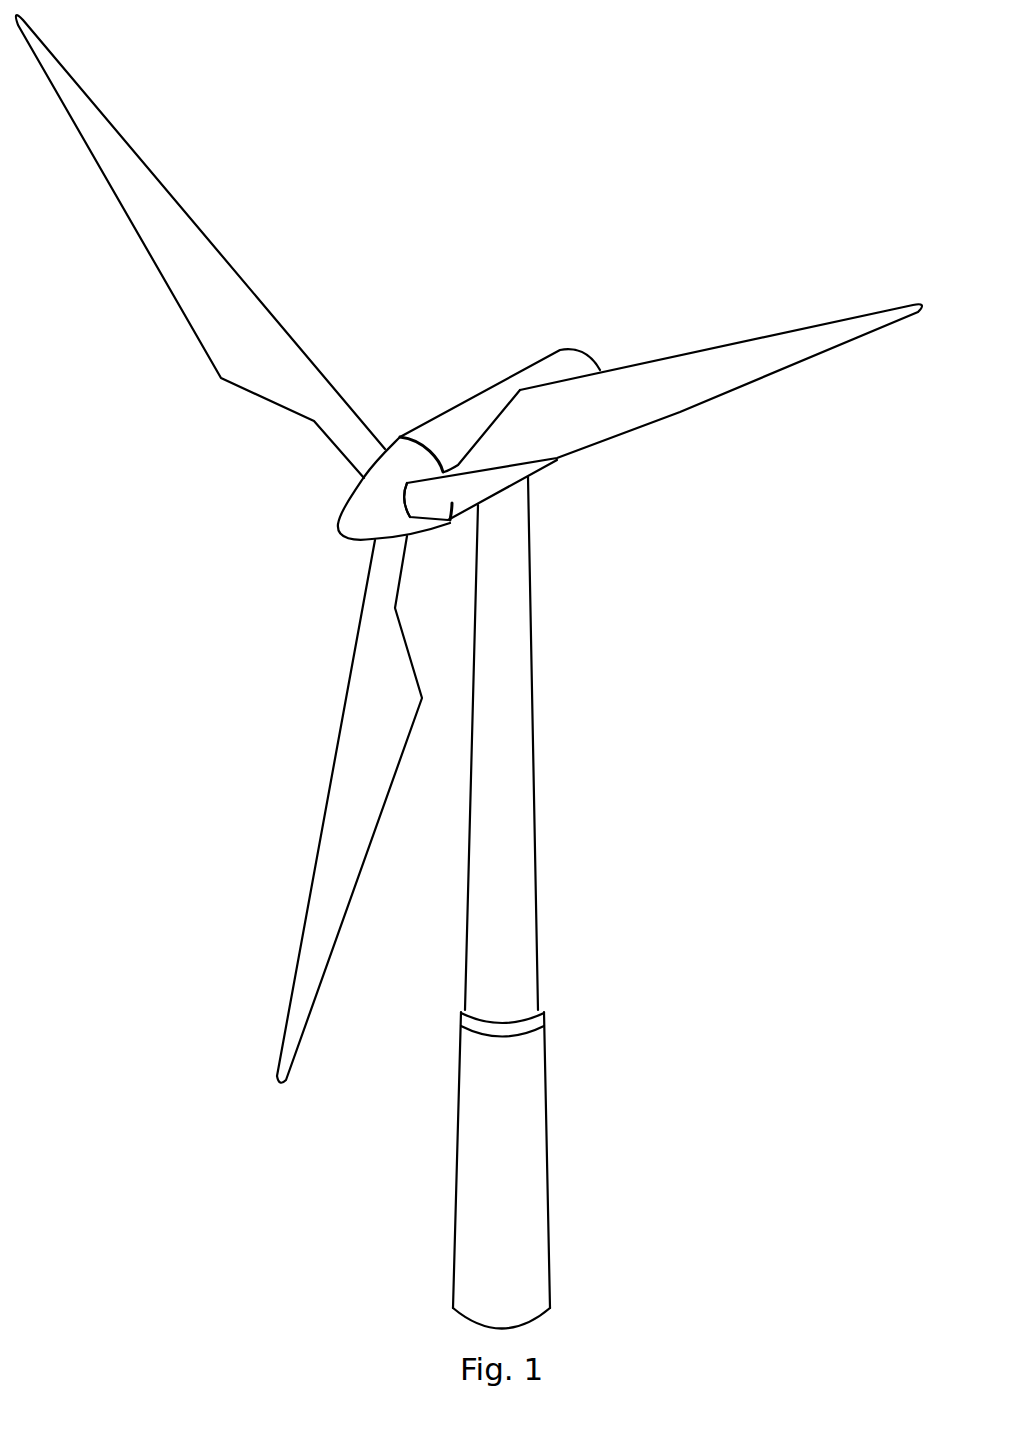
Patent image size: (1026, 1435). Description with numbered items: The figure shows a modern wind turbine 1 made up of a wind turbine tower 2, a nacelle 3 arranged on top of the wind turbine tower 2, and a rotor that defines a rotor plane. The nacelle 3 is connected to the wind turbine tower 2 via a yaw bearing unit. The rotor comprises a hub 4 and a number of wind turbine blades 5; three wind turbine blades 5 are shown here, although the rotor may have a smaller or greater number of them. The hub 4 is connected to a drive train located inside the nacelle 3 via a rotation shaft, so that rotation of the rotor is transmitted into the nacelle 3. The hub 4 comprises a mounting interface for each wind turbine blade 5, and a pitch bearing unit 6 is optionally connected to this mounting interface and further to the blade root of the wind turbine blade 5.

The wind turbine 1 is at (648, 835).
The wind turbine tower 2 is at (522, 750).
The nacelle 3 is at (463, 418).
The hub 4 is at (358, 513).
The wind turbine blades 5 is at (237, 346).
The pitch bearing unit 6 is at (406, 528).